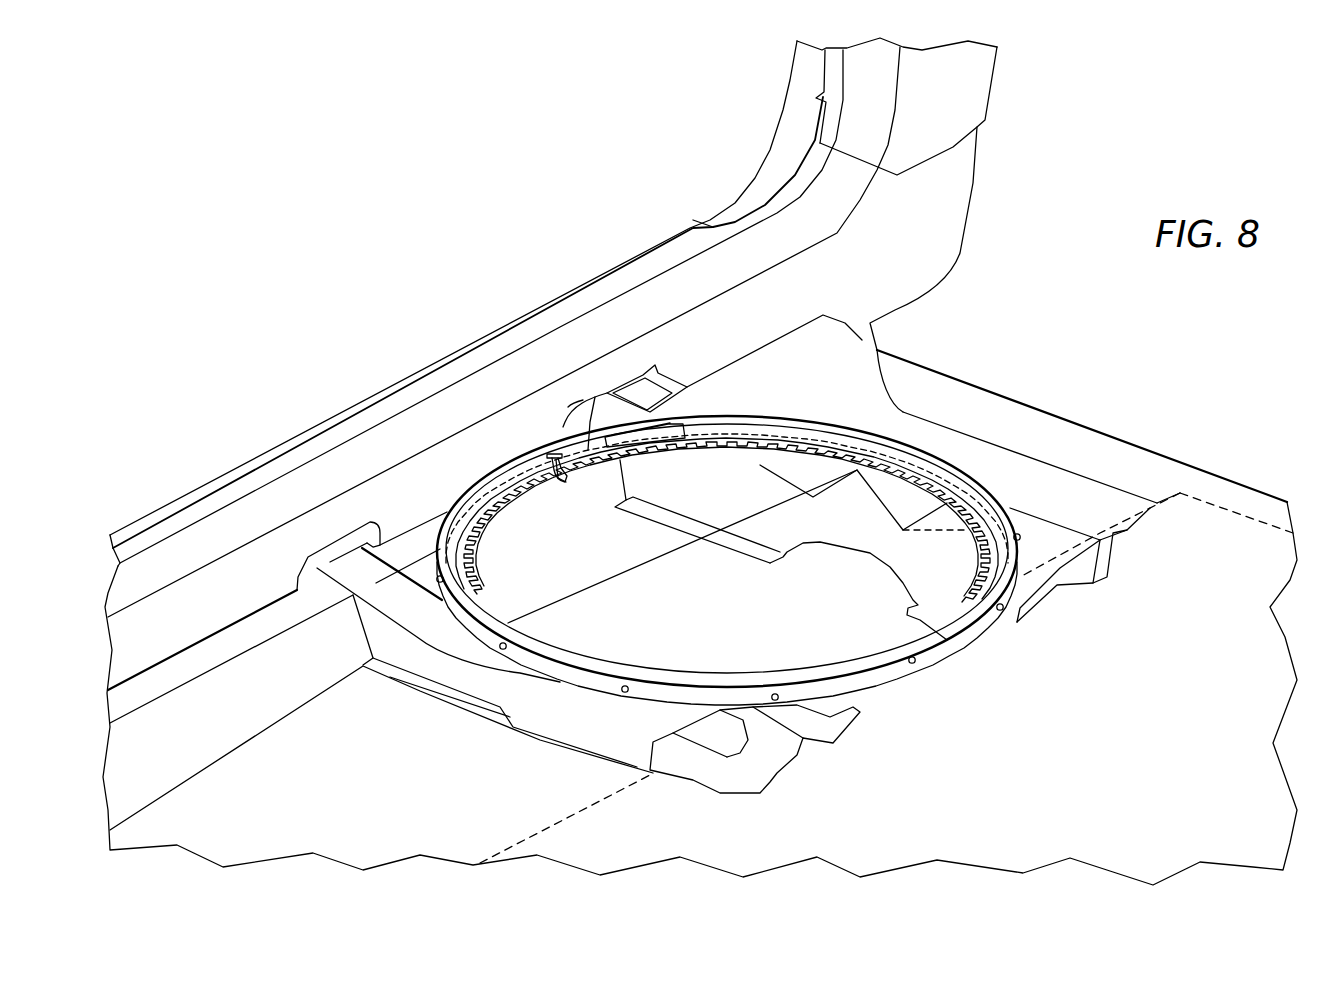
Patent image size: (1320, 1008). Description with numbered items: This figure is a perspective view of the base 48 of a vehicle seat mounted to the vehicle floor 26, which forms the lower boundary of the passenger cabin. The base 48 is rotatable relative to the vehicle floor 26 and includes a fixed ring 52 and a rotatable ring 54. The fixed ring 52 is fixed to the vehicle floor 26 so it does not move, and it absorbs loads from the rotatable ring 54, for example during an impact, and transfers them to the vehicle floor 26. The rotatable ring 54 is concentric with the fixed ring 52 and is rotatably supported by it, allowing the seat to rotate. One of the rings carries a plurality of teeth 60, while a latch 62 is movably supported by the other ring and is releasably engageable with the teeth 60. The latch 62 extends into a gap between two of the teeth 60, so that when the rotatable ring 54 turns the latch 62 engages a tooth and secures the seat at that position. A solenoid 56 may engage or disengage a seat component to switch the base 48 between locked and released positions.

The vehicle floor 26 is at (1179, 777).
The base 48 is at (962, 432).
The fixed ring 52 is at (887, 677).
The rotatable ring 54 is at (910, 652).
The solenoid 56 is at (560, 480).
The teeth 60 is at (763, 447).
The latch 62 is at (568, 482).